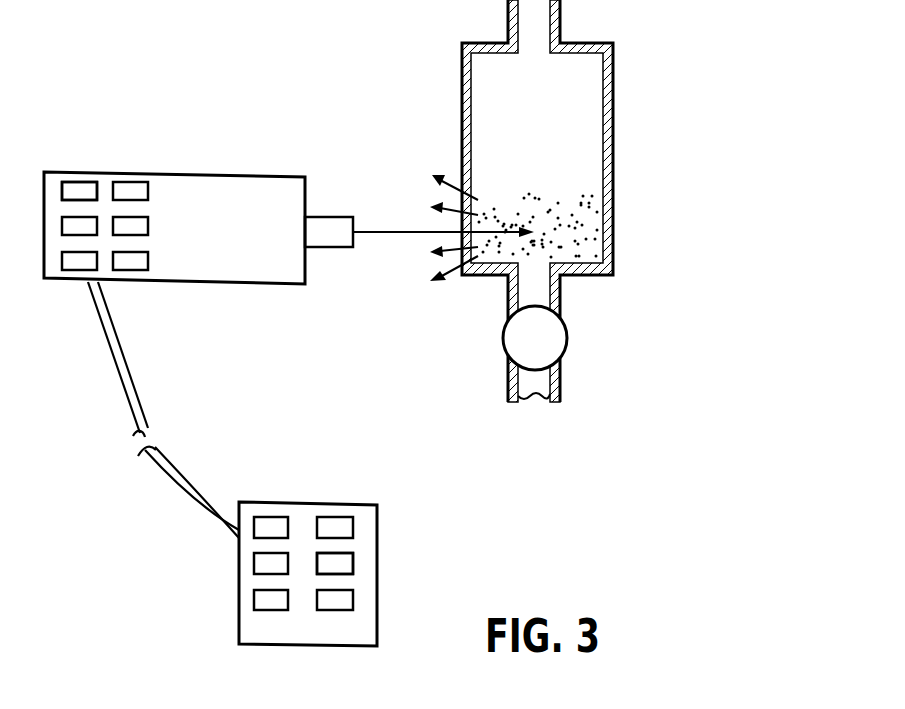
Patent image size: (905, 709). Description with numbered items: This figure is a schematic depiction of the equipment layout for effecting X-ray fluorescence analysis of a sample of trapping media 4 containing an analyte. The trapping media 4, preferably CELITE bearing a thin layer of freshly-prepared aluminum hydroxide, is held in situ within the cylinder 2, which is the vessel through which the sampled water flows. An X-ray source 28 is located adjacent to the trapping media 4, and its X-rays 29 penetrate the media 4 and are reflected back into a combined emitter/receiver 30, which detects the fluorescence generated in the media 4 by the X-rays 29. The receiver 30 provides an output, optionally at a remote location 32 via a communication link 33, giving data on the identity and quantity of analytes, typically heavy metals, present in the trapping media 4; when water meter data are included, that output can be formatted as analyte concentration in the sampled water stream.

The cylinder 2 is at (612, 72).
The trapping media 4 is at (588, 229).
The X-ray source 28 is at (222, 183).
The X-rays 29 is at (387, 232).
The combined emitter/receiver 30 is at (325, 248).
The remote location 32 is at (295, 500).
The communication link 33 is at (132, 422).